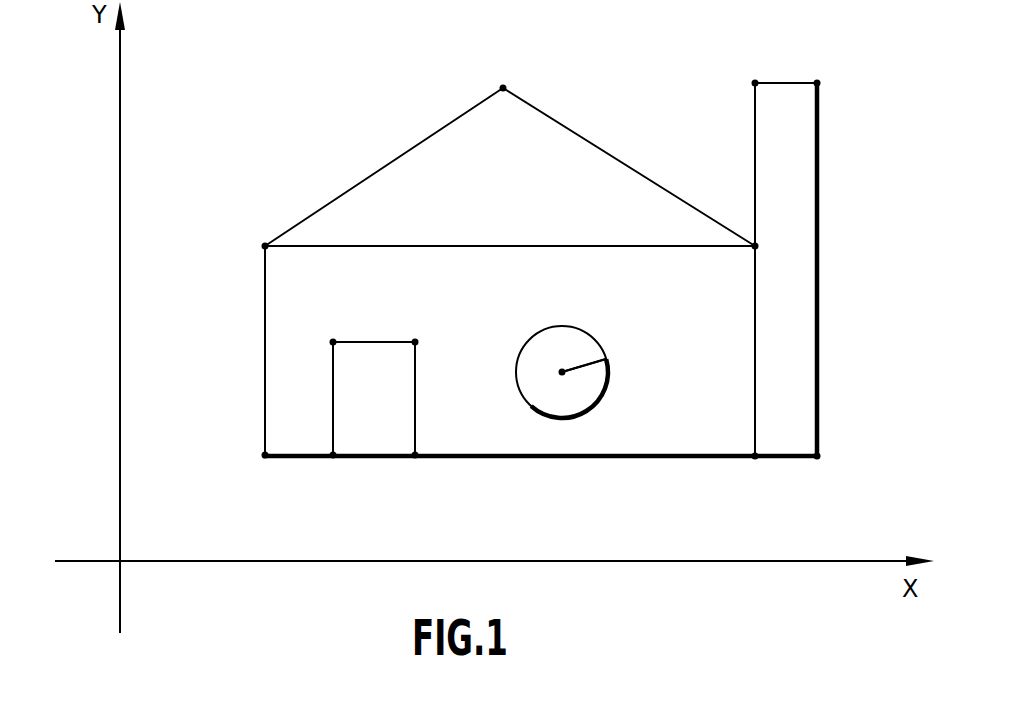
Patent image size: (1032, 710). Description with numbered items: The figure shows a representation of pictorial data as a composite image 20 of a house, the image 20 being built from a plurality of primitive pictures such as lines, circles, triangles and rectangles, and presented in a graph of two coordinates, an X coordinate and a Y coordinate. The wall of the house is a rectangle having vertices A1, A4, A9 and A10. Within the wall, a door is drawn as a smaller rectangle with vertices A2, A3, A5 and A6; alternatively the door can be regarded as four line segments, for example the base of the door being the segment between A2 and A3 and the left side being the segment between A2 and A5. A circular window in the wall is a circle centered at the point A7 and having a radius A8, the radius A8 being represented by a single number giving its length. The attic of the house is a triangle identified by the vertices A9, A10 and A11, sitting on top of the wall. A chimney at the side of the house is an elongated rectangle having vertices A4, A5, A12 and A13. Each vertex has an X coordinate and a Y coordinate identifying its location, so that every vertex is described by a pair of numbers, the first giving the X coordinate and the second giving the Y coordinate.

The composite image 20 is at (378, 102).
The vertex A1 is at (265, 455).
The vertex A2 is at (333, 455).
The vertex A3 is at (415, 455).
The vertex A4 is at (755, 456).
The vertex A5 is at (817, 456).
The vertex A6 is at (415, 342).
The point A7 is at (562, 372).
The radius A8 is at (585, 362).
The vertex A9 is at (265, 246).
The vertex A10 is at (755, 246).
The vertex A11 is at (503, 88).
The vertex A12 is at (755, 83).
The vertex A13 is at (817, 83).